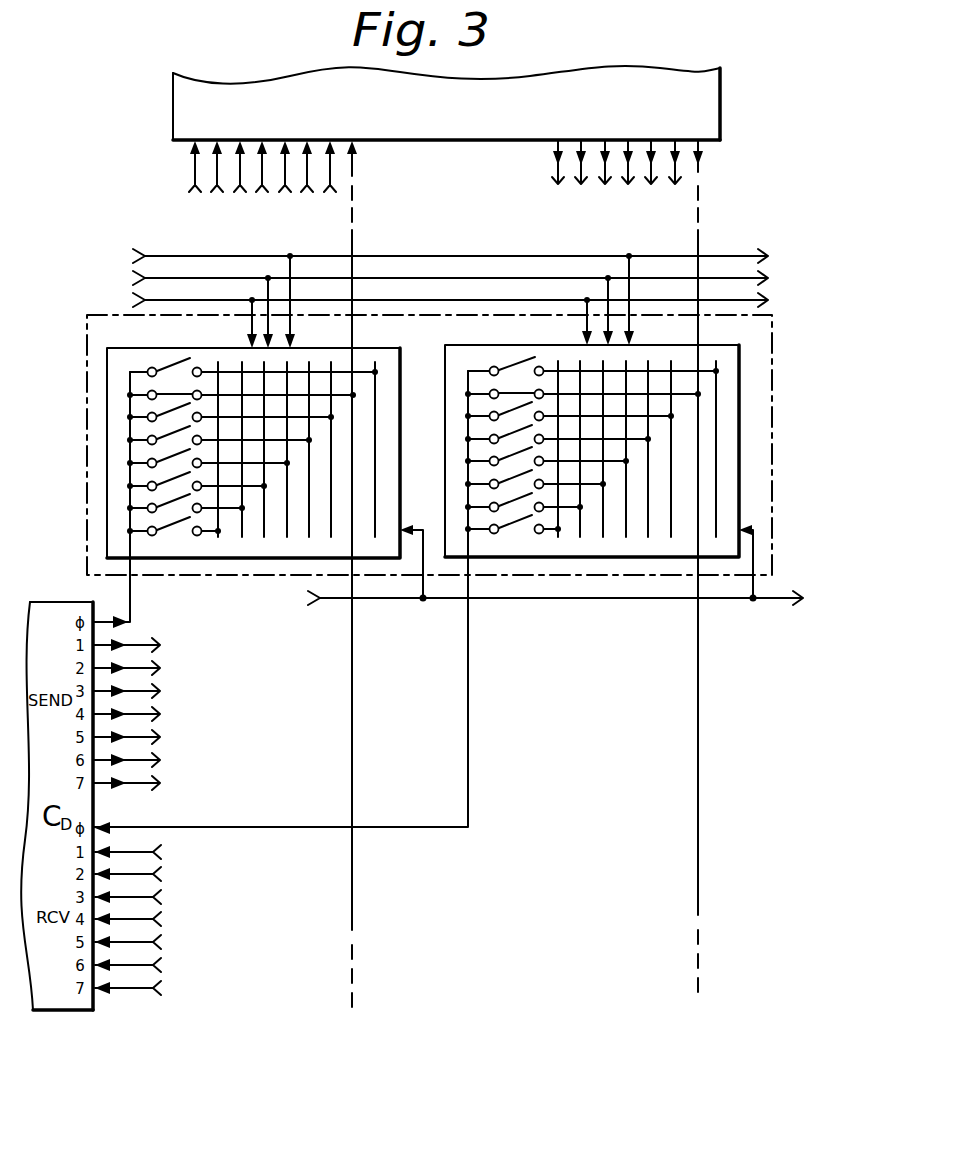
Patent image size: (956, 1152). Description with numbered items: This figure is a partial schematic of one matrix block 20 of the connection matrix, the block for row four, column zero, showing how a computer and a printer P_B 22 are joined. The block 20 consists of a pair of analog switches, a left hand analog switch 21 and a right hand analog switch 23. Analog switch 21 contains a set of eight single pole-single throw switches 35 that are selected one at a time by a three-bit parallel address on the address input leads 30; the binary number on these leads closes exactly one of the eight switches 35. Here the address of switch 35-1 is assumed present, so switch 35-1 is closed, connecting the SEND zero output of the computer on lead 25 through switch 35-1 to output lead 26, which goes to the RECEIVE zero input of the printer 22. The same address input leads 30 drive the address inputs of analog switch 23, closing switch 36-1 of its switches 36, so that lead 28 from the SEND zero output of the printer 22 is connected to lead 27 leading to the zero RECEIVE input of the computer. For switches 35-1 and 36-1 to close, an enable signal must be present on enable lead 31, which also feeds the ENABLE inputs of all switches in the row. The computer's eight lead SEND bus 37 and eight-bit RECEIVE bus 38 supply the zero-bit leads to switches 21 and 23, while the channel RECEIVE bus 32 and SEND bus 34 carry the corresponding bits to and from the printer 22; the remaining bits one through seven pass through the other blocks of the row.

The printer P_B 22 is at (710, 100).
The channel 1 RECEIVE bus 32 is at (182, 160).
The channel 1 SEND bus 34 is at (540, 163).
The address input leads 30 is at (423, 243).
The matrix block 20 is at (87, 430).
The analog switch 21 is at (402, 424).
The analog switch 23 is at (447, 440).
The single pole-single throw switches 35 is at (207, 438).
The switch 35-1 is at (177, 397).
The analog switch switches 36 is at (592, 475).
The switch 36-1 is at (513, 393).
The lead from SEND 0 output of computer 25 is at (130, 612).
The output lead 26 is at (352, 641).
The lead to RECEIVE input of computer 27 is at (467, 635).
The lead from SEND 0 output of printer 28 is at (698, 645).
The enable lead 31 is at (728, 601).
The SEND bus 37 is at (140, 797).
The RECEIVE bus 38 is at (140, 1010).